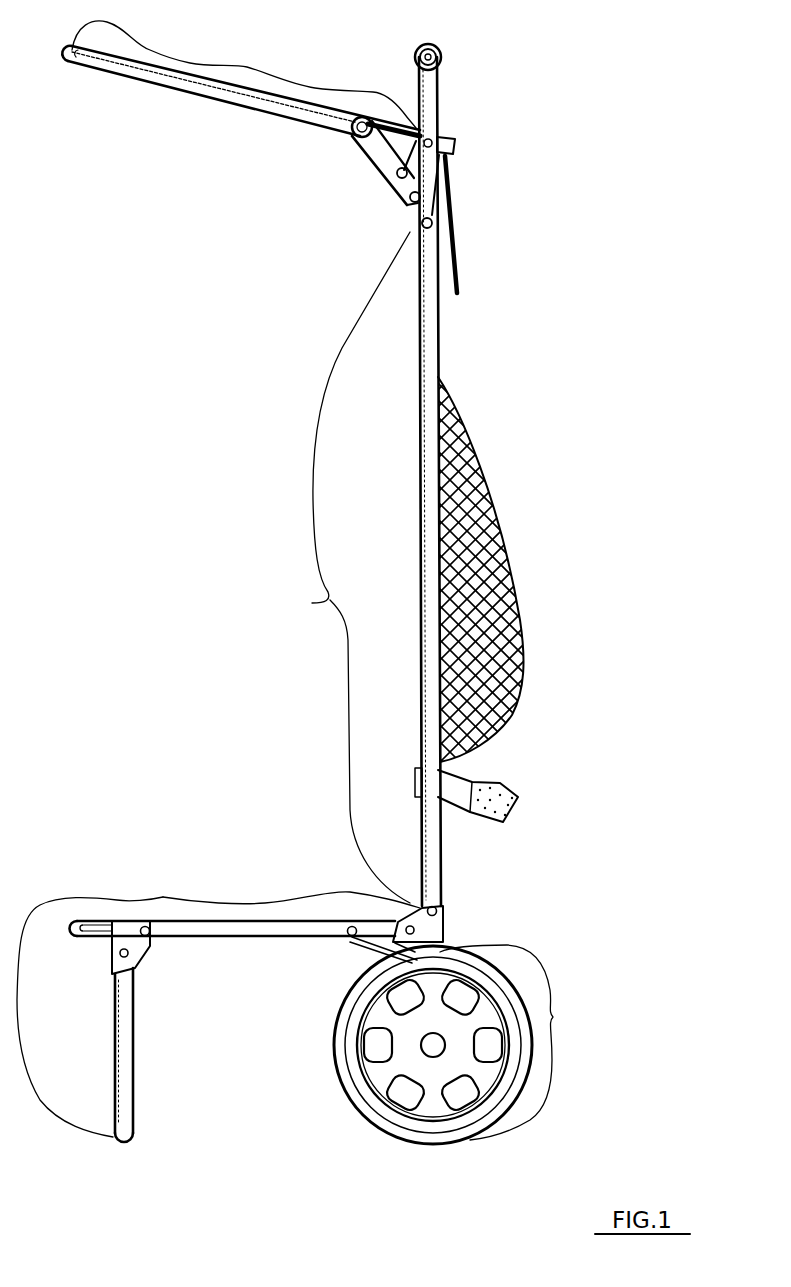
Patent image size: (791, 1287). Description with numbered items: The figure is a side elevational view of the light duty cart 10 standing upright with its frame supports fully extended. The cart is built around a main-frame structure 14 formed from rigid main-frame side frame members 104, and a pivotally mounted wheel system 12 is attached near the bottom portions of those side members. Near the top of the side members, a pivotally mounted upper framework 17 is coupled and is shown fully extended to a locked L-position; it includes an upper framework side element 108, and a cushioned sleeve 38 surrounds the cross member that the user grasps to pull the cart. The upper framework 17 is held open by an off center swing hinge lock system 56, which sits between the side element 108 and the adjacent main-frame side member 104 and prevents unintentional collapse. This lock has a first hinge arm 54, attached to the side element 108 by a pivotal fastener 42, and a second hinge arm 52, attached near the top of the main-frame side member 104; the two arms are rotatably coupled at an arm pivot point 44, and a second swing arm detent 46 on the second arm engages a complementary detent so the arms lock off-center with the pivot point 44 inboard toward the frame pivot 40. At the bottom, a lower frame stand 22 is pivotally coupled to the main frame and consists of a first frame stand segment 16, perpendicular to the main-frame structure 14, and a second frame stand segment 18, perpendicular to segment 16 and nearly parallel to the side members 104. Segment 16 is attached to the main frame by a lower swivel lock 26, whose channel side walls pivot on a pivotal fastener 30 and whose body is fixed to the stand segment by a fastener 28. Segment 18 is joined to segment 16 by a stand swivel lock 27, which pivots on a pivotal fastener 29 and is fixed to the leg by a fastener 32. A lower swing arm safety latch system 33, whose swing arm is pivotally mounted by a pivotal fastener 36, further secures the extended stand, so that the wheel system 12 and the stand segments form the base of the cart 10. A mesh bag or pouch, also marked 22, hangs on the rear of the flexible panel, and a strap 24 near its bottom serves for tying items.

The light duty cart 10 is at (160, 450).
The wheel system 12 is at (556, 1017).
The main-frame structure 14 is at (312, 603).
The first frame stand segment 16 is at (243, 922).
The upper framework 17 is at (253, 70).
The second frame stand segment 18 is at (136, 1092).
The lower frame stand 22 is at (490, 500).
The strap 24 is at (500, 785).
The lower swivel lock 26 is at (442, 918).
The stand swivel lock 27 is at (138, 950).
The fastener 28 is at (413, 902).
The pivotal fastener 29 is at (142, 942).
The pivotal fastener 30 is at (388, 908).
The fastener 32 is at (120, 955).
The lower swing arm safety latch system 33 is at (342, 948).
The pivotal fastener 36 is at (348, 927).
The cushioned sleeve 38 is at (432, 45).
The frame pivot 40 is at (438, 128).
The pivotal fastener 42 is at (352, 132).
The arm pivot point 44 is at (408, 233).
The second swing arm detent 46 is at (440, 175).
The second hinge arm 52 is at (413, 205).
The first hinge arm 54 is at (415, 127).
The off center swing hinge lock system 56 is at (398, 173).
The main-frame side frame member 104 is at (440, 843).
The upper framework side element 108 is at (207, 100).